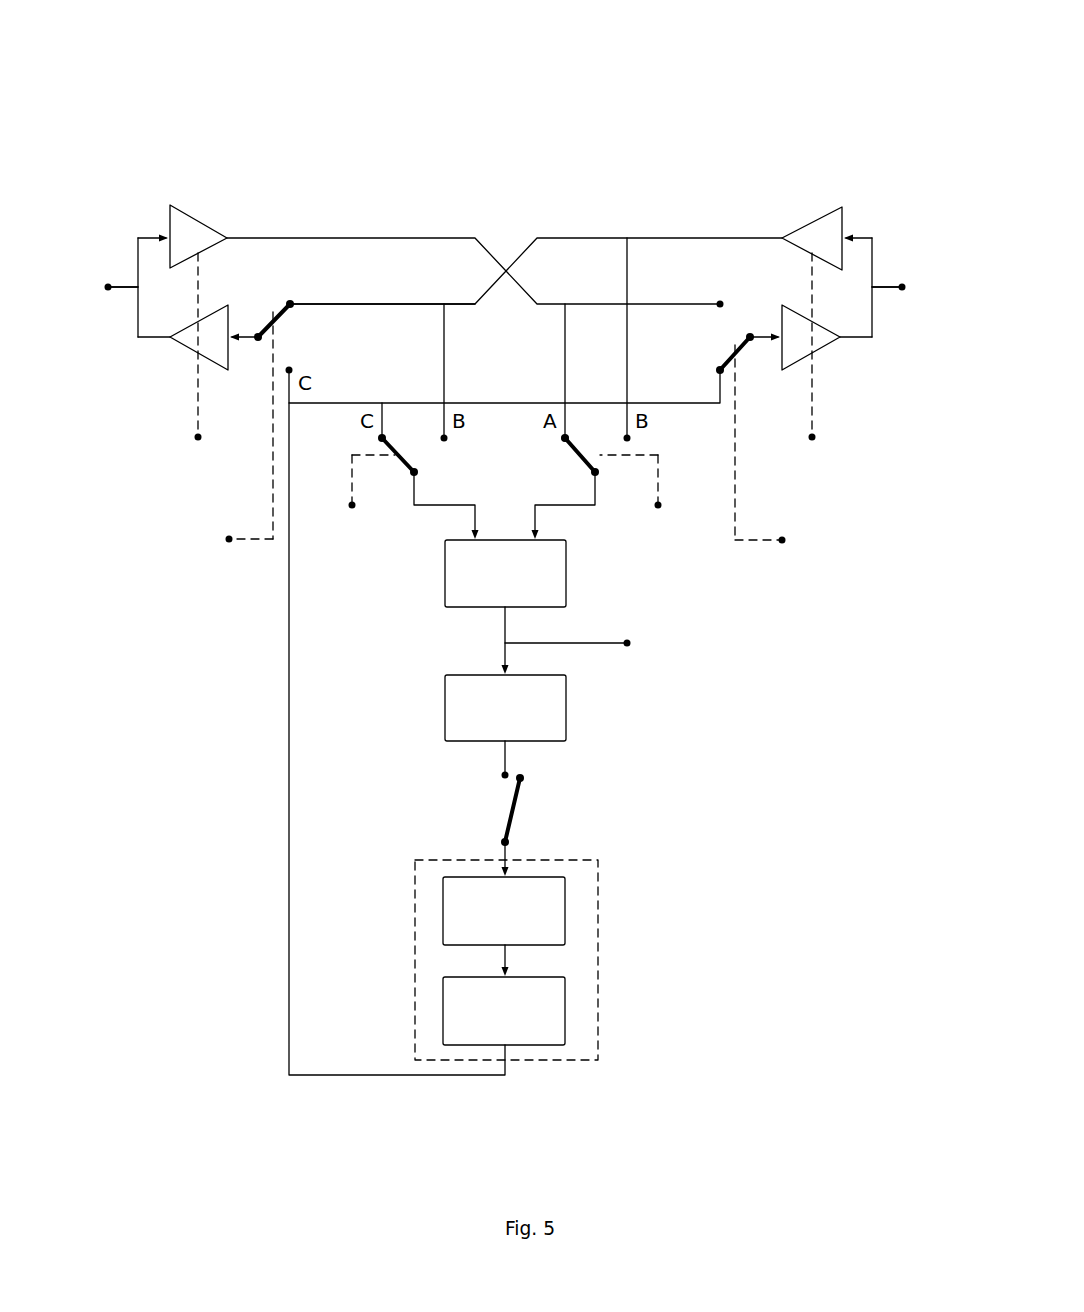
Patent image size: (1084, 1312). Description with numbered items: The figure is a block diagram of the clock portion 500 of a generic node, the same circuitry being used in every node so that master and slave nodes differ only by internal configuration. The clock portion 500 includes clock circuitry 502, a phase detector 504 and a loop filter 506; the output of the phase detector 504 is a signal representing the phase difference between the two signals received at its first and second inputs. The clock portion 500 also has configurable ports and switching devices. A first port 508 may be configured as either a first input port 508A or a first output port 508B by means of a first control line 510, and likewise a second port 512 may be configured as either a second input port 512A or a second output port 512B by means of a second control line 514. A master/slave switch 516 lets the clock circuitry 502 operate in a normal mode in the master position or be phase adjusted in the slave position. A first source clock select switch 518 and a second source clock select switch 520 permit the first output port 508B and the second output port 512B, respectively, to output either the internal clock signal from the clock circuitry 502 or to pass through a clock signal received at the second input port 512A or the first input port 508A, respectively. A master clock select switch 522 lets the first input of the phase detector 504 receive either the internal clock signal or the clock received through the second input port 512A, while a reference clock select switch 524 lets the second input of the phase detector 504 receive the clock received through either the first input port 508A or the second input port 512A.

The clock portion 500 is at (583, 112).
The clock circuitry 502 is at (595, 900).
The phase detector 504 is at (445, 590).
The loop filter 506 is at (566, 708).
The first port 508 is at (123, 287).
The first input port 508A is at (200, 223).
The first output port 508B is at (183, 343).
The first control line 510 is at (197, 393).
The second port 512 is at (888, 287).
The second input port 512A is at (820, 212).
The second output port 512B is at (830, 345).
The second control line 514 is at (812, 398).
The master/slave switch 516 is at (515, 813).
The first source clock select switch 518 is at (287, 313).
The second source clock select switch 520 is at (737, 351).
The master clock select switch 522 is at (390, 447).
The reference clock select switch 524 is at (583, 463).